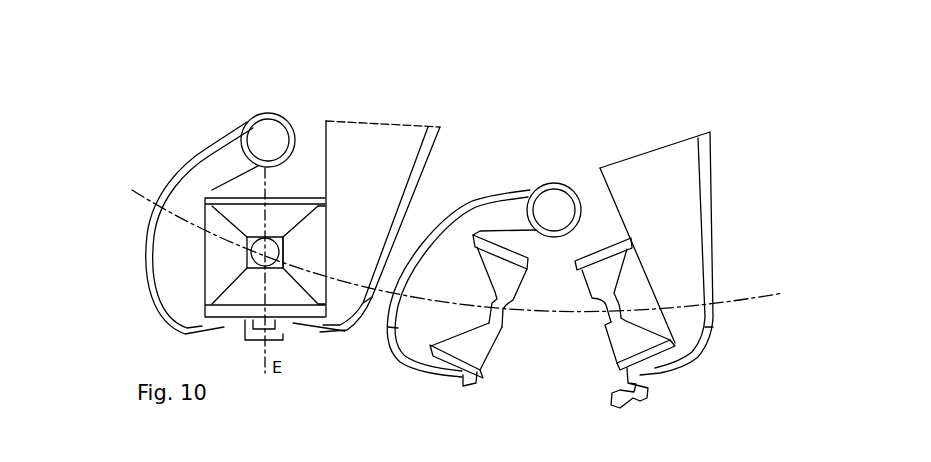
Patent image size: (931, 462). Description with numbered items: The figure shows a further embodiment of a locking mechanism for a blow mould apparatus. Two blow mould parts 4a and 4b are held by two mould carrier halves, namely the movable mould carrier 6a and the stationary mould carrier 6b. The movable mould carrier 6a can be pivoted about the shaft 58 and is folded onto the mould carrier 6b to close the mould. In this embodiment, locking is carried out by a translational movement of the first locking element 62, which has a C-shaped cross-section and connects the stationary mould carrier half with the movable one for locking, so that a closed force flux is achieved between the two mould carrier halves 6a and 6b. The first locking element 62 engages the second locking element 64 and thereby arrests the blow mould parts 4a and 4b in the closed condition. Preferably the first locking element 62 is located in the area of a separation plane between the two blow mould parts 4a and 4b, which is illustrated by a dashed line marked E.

The blow mould part 4a is at (217, 242).
The blow mould part 4b is at (302, 230).
The movable mould carrier 6a is at (190, 204).
The mould carrier 6b is at (369, 213).
The shaft 58 is at (542, 210).
The first locking element 62 is at (645, 384).
The second locking element 64 is at (467, 388).